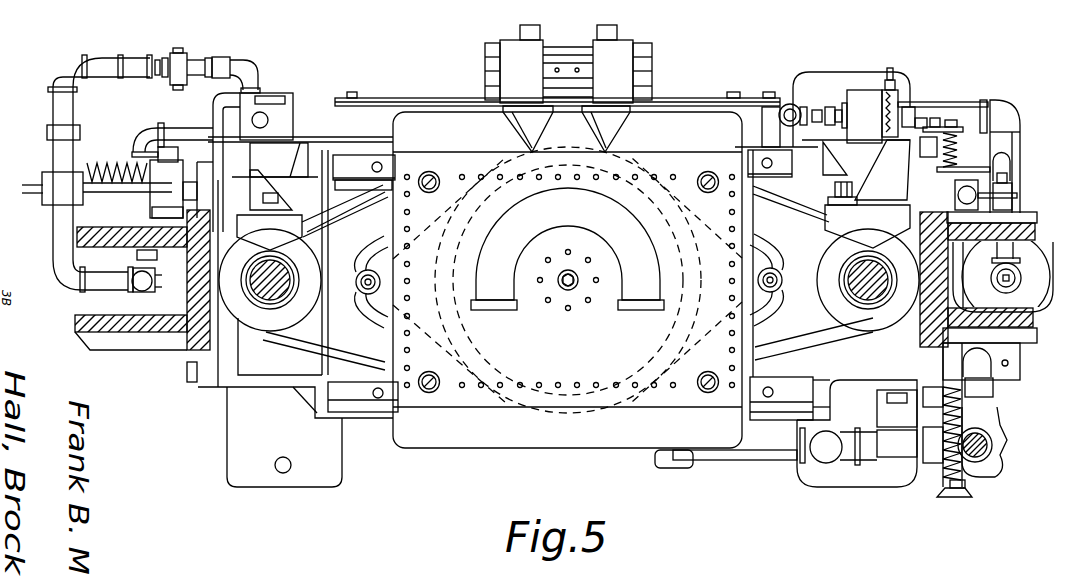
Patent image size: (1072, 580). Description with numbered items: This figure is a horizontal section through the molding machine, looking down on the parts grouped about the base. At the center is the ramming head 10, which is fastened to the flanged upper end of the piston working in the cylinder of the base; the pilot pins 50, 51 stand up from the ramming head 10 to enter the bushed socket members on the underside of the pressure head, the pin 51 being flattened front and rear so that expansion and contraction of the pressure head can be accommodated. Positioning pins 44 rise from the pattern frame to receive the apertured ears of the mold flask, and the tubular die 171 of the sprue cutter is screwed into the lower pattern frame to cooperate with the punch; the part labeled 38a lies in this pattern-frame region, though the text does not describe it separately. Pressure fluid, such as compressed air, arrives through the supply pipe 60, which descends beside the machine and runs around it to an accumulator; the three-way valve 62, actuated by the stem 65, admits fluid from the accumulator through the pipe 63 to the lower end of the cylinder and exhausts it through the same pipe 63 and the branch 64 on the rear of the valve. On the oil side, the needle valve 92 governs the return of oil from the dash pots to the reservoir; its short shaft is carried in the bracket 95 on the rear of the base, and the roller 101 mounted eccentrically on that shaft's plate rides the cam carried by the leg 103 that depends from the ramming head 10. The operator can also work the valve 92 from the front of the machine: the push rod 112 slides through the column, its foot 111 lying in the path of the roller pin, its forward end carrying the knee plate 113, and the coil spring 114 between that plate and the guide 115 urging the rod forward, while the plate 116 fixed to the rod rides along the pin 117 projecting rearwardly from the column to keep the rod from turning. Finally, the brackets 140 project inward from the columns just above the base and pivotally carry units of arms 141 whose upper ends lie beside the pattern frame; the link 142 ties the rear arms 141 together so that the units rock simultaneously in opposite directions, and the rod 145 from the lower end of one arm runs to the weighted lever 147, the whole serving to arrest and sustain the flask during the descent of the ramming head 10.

The ramming head 10 is at (833, 338).
The plate 38a is at (567, 277).
The positioning pins 44 is at (385, 268).
The pilot pin 50 is at (267, 292).
The pilot pin 51 is at (870, 293).
The pipe 60 is at (147, 283).
The valve 62 is at (995, 441).
The pipe 63 is at (768, 455).
The branch 64 is at (980, 371).
The stem 65 is at (990, 459).
The valve 92 is at (798, 108).
The bracket 95 is at (866, 90).
The roller 101 is at (912, 118).
The leg 103 is at (927, 130).
The foot 111 is at (952, 125).
The push rod 112 is at (987, 127).
The knee plate 113 is at (960, 500).
The coil spring 114 is at (962, 410).
The guide 115 is at (968, 386).
The plate 116 is at (987, 160).
The pin 117 is at (978, 195).
The brackets 140 is at (273, 385).
The arms 141 is at (388, 168).
The link 142 is at (450, 97).
The rod 145 is at (195, 162).
The lever 147 is at (152, 215).
The tubular die 171 is at (566, 288).